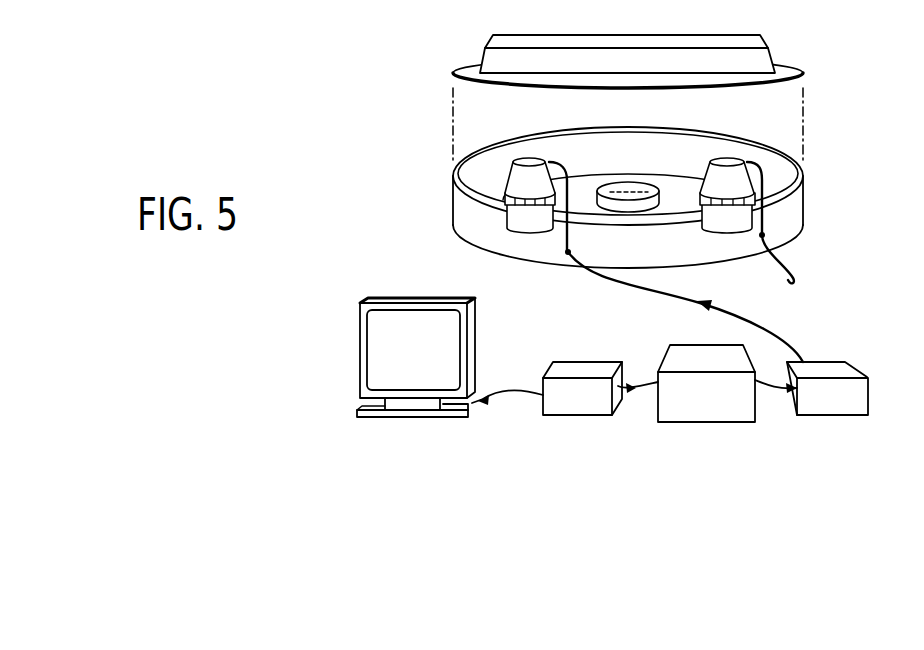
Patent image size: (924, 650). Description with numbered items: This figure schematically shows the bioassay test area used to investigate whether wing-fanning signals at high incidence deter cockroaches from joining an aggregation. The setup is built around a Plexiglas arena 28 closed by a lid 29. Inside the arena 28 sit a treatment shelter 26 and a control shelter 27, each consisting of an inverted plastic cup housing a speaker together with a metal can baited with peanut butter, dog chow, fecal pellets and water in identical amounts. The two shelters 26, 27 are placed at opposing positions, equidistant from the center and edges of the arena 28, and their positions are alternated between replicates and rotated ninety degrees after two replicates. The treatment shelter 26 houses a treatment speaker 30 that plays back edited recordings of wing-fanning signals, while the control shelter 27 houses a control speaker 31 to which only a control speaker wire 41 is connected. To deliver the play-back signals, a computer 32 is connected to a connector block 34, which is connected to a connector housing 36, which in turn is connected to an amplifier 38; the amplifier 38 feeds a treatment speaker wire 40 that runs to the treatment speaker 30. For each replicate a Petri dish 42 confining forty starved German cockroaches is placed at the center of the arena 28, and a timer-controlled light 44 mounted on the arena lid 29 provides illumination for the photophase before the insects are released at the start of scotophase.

The treatment shelter 26 is at (531, 228).
The control shelter 27 is at (721, 229).
The Plexiglas arena 28 is at (452, 201).
The lid 29 is at (470, 67).
The treatment speaker 30 is at (504, 176).
The control speaker 31 is at (702, 177).
The computer 32 is at (358, 368).
The connector block 34 is at (583, 367).
The connector housing 36 is at (705, 352).
The amplifier 38 is at (827, 366).
The treatment speaker wire 40 is at (728, 308).
The control speaker wire 41 is at (790, 264).
The Petri dish 42 is at (611, 183).
The light 44 is at (764, 38).